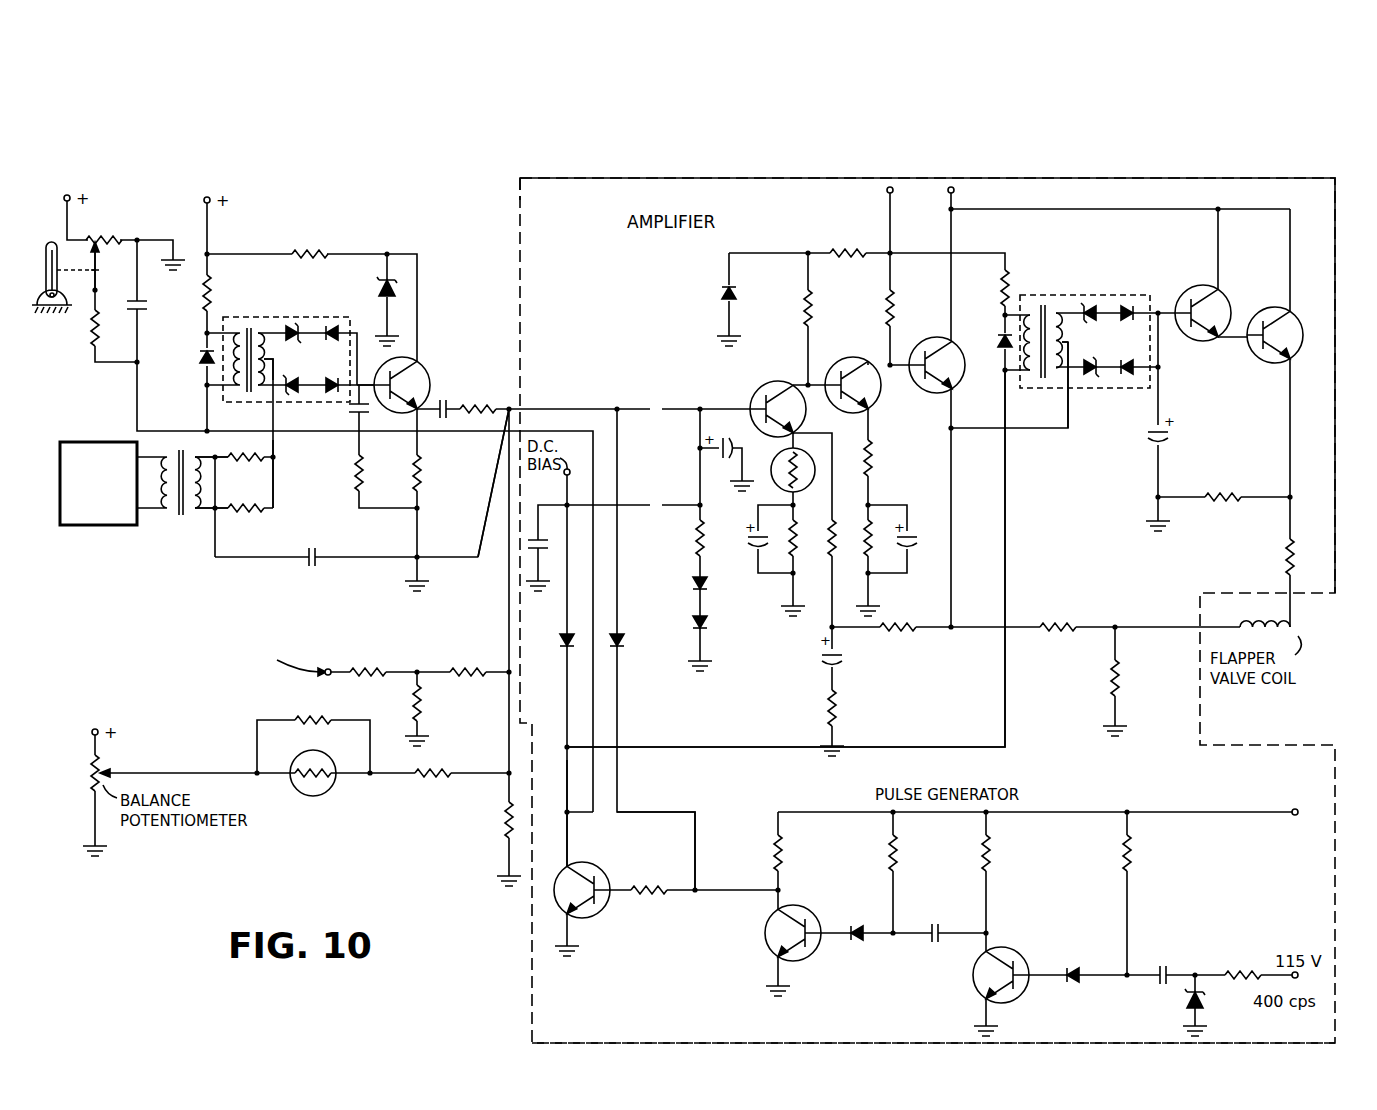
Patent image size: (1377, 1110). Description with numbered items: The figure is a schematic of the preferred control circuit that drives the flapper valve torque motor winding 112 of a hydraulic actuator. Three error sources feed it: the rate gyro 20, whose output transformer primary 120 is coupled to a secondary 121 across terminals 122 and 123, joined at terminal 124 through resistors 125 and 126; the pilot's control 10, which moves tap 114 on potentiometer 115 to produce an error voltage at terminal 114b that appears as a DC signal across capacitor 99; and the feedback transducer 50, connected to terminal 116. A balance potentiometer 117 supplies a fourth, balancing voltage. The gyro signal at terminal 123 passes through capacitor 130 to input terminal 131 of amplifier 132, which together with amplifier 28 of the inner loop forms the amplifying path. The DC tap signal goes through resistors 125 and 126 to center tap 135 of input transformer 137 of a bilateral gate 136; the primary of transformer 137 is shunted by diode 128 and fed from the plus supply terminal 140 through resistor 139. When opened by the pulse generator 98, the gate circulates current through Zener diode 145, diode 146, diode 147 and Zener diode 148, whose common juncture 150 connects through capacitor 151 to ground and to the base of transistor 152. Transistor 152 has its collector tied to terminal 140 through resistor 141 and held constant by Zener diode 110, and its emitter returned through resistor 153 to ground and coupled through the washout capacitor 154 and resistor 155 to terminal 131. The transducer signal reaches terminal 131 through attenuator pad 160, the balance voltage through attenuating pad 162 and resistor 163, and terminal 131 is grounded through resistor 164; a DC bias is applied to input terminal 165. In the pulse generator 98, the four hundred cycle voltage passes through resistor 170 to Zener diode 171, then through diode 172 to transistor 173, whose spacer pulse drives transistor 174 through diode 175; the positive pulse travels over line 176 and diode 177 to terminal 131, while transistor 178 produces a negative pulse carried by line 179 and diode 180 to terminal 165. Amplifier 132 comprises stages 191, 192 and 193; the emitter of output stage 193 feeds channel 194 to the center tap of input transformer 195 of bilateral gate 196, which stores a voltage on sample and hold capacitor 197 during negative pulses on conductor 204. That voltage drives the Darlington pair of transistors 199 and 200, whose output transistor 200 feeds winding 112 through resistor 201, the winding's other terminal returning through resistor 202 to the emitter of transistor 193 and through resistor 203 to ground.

The control 10 is at (58, 240).
The rate gyro 20 is at (100, 442).
The amplifier 28 is at (688, 253).
The feedback transducer 50 is at (252, 674).
The pulse generator 98 is at (953, 873).
The capacitor 99 is at (148, 306).
The Zener diode 110 is at (385, 280).
The torque motor winding 112 is at (1272, 620).
The tap 114 is at (97, 270).
The terminal 114b is at (134, 364).
The potentiometer 115 is at (97, 240).
The terminal 116 is at (329, 669).
The balance potentiometer 117 is at (101, 764).
The output transformer primary 120 is at (168, 464).
The secondary 121 is at (196, 510).
The terminal 122 is at (215, 458).
The terminal 123 is at (215, 508).
The terminal 124 is at (274, 457).
The resistor 125 is at (250, 455).
The resistor 126 is at (246, 510).
The diode 128 is at (199, 362).
The capacitor 130 is at (313, 556).
The input terminal 131 is at (505, 412).
The amplifier 132 is at (519, 242).
The center tap 135 is at (264, 359).
The bilateral gate 136 is at (260, 402).
The input transformer 137 is at (247, 328).
The resistor 139 is at (200, 292).
The terminal 140 is at (204, 197).
The resistor 141 is at (295, 254).
The Zener diode 145 is at (294, 326).
The diode 146 is at (330, 326).
The diode 147 is at (345, 372).
The Zener diode 148 is at (292, 392).
The common juncture 150 is at (374, 385).
The capacitor 151 is at (359, 413).
The transistor 152 is at (425, 370).
The resistor 153 is at (420, 473).
The capacitor 154 is at (442, 406).
The resistor 155 is at (478, 408).
The attenuator pad 160 is at (421, 687).
The attenuating pad 162 is at (300, 750).
The resistor 163 is at (435, 771).
The resistor 164 is at (505, 820).
The input terminal 165 is at (567, 505).
The resistor 170 is at (1248, 972).
The Zener diode 171 is at (1201, 1006).
The diode 172 is at (1074, 983).
The transistor 173 is at (1008, 955).
The transistor 174 is at (802, 913).
The diode 175 is at (857, 941).
The line 176 is at (647, 812).
The diode 177 is at (619, 634).
The transistor 178 is at (592, 876).
The line 179 is at (568, 836).
The diode 180 is at (566, 634).
The first stage 191 is at (780, 382).
The second stage 192 is at (856, 358).
The output stage 193 is at (937, 338).
The channel 194 is at (1038, 431).
The input transformer 195 is at (1040, 296).
The bilateral gate 196 is at (1105, 295).
The sample and hold capacitor 197 is at (1170, 437).
The transistor 199 is at (1228, 300).
The output transistor 200 is at (1268, 360).
The resistor 201 is at (1284, 552).
The resistor 202 is at (1050, 626).
The resistor 203 is at (1122, 678).
The conductor 204 is at (1008, 699).